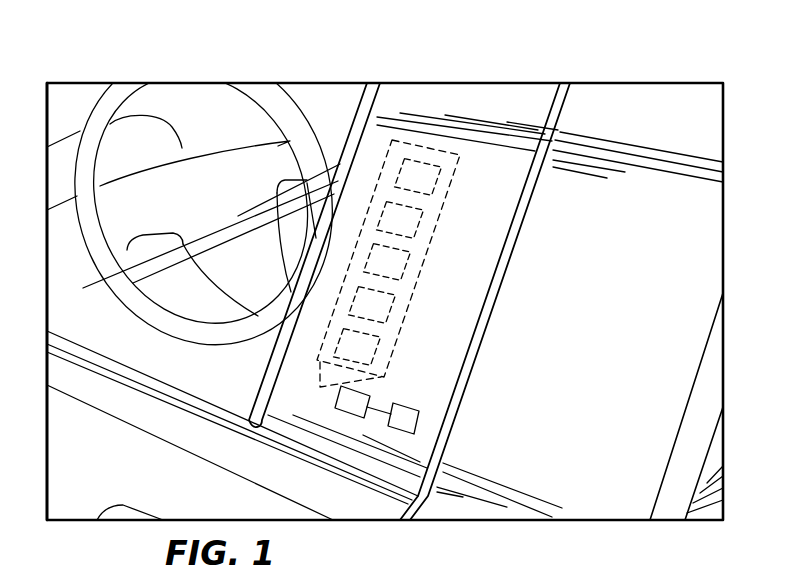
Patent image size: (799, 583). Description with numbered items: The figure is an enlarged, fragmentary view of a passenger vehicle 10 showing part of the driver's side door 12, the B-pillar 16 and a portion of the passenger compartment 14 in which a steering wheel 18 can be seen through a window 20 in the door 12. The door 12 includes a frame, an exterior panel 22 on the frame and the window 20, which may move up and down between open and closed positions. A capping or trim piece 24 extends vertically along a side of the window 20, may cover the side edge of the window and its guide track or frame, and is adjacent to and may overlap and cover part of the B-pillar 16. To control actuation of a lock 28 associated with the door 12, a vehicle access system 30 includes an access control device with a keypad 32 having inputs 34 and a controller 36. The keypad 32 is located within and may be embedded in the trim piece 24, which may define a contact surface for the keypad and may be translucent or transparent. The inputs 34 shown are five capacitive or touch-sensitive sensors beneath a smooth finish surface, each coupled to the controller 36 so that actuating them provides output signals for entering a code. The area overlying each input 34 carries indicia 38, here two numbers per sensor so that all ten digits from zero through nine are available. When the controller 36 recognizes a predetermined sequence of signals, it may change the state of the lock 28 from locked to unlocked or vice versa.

The passenger vehicle 10 is at (357, 80).
The door 12 is at (45, 412).
The passenger compartment 14 is at (87, 315).
The B-pillar 16 is at (673, 256).
The steering wheel 18 is at (118, 93).
The window 20 is at (248, 390).
The exterior panel 22 is at (123, 481).
The trim piece 24 is at (493, 101).
The lock 28 is at (420, 417).
The vehicle access system 30 is at (506, 171).
The keypad 32 is at (447, 193).
The inputs 34 is at (400, 277).
The controller 36 is at (363, 394).
The indicia 38 is at (390, 263).